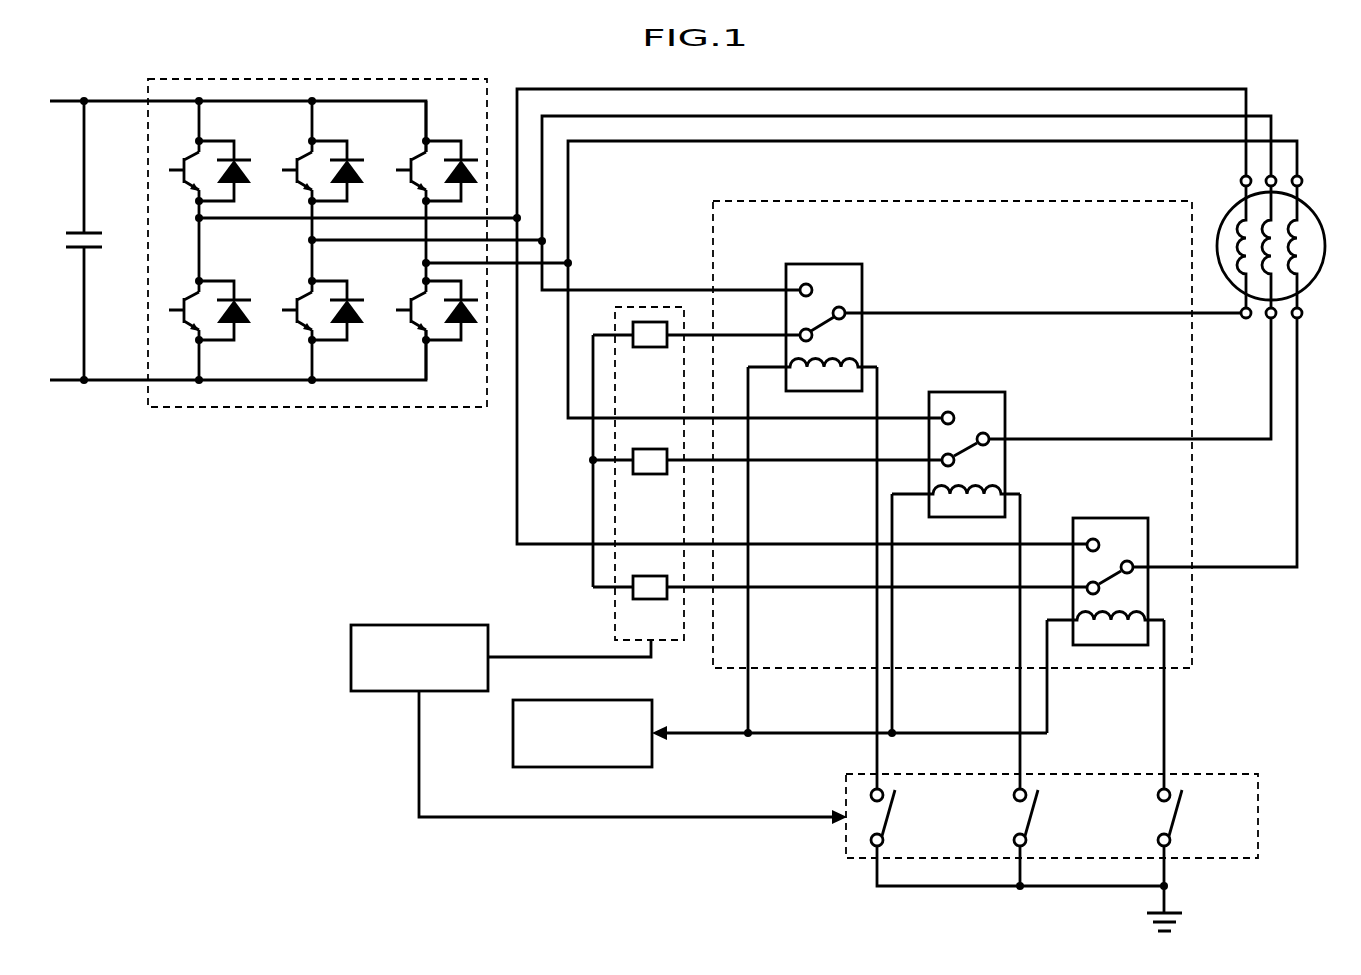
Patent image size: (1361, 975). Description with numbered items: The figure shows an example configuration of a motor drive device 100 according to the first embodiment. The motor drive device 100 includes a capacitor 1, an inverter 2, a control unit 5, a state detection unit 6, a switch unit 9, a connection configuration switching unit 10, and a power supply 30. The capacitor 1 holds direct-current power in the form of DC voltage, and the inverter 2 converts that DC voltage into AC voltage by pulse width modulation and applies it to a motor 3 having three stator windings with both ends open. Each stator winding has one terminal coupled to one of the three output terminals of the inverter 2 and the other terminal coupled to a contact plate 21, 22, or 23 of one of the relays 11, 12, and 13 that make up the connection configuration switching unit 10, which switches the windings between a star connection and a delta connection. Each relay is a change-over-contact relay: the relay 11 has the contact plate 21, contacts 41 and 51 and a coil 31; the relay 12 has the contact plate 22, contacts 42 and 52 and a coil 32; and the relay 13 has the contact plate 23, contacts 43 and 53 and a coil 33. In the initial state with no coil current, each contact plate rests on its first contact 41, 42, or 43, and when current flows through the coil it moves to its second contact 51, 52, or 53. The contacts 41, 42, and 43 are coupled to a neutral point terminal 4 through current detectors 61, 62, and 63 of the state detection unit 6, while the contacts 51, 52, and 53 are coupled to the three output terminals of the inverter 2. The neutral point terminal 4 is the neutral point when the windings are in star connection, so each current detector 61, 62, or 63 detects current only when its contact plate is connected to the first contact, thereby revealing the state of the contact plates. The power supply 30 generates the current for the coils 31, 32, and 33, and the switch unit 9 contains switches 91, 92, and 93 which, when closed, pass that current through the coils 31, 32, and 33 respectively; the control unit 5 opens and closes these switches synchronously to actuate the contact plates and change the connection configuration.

The motor drive device 100 is at (1188, 56).
The capacitor 1 is at (86, 243).
The inverter 2 is at (397, 79).
The motor 3 is at (1310, 210).
The neutral point terminal 4 is at (590, 460).
The control unit 5 is at (440, 625).
The state detection unit 6 is at (612, 623).
The switch unit 9 is at (1258, 820).
The connection configuration switching unit 10 is at (1077, 200).
The relay 11 is at (840, 264).
The relay 12 is at (985, 392).
The relay 13 is at (1128, 518).
The contact plate 21 is at (827, 306).
The contact plate 22 is at (979, 433).
The contact plate 23 is at (1122, 561).
The power supply 30 is at (608, 700).
The coil 31 is at (850, 359).
The coil 32 is at (985, 484).
The coil 33 is at (1130, 612).
The contact 41 is at (800, 338).
The contact 42 is at (942, 465).
The contact 43 is at (1087, 593).
The contact 51 is at (800, 288).
The contact 52 is at (943, 413).
The contact 53 is at (1087, 540).
The current detector 61 is at (644, 348).
The current detector 62 is at (645, 475).
The current detector 63 is at (645, 600).
The switch 91 is at (893, 815).
The switch 92 is at (1036, 815).
The switch 93 is at (1180, 815).